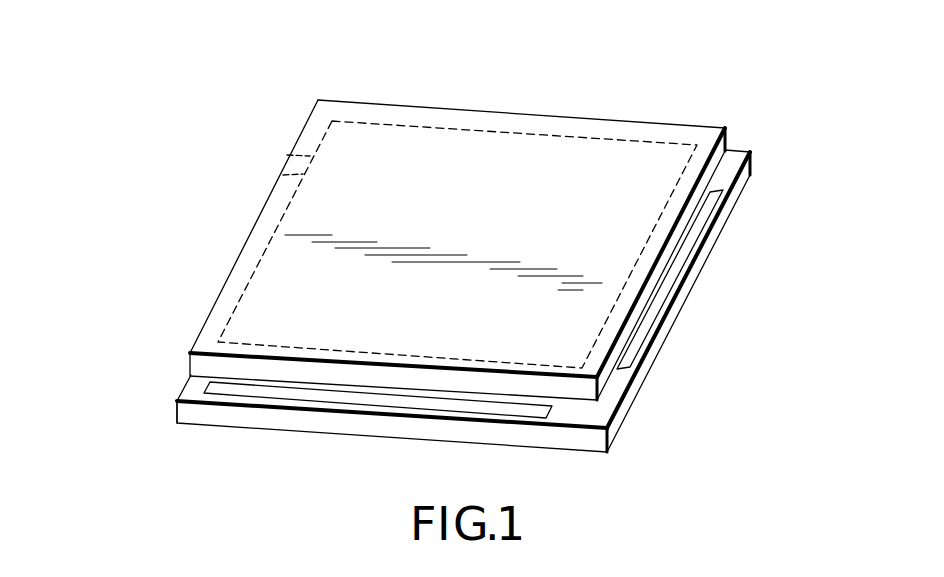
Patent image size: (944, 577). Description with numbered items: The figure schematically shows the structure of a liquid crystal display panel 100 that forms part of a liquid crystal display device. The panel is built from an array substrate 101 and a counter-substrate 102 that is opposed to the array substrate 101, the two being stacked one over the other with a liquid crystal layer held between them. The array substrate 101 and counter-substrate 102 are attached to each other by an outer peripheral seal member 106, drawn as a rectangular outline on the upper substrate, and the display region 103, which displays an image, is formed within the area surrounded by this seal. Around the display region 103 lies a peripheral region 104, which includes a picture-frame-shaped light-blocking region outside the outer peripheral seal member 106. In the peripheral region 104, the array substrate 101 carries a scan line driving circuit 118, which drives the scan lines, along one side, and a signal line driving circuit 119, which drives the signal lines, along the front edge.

The liquid crystal display panel 100 is at (760, 22).
The array substrate 101 is at (743, 149).
The counter-substrate 102 is at (672, 124).
The display region 103 is at (498, 158).
The peripheral region 104 is at (181, 387).
The outer peripheral seal member 106 is at (372, 122).
The scan line driving circuit 118 is at (658, 303).
The signal line driving circuit 119 is at (347, 396).